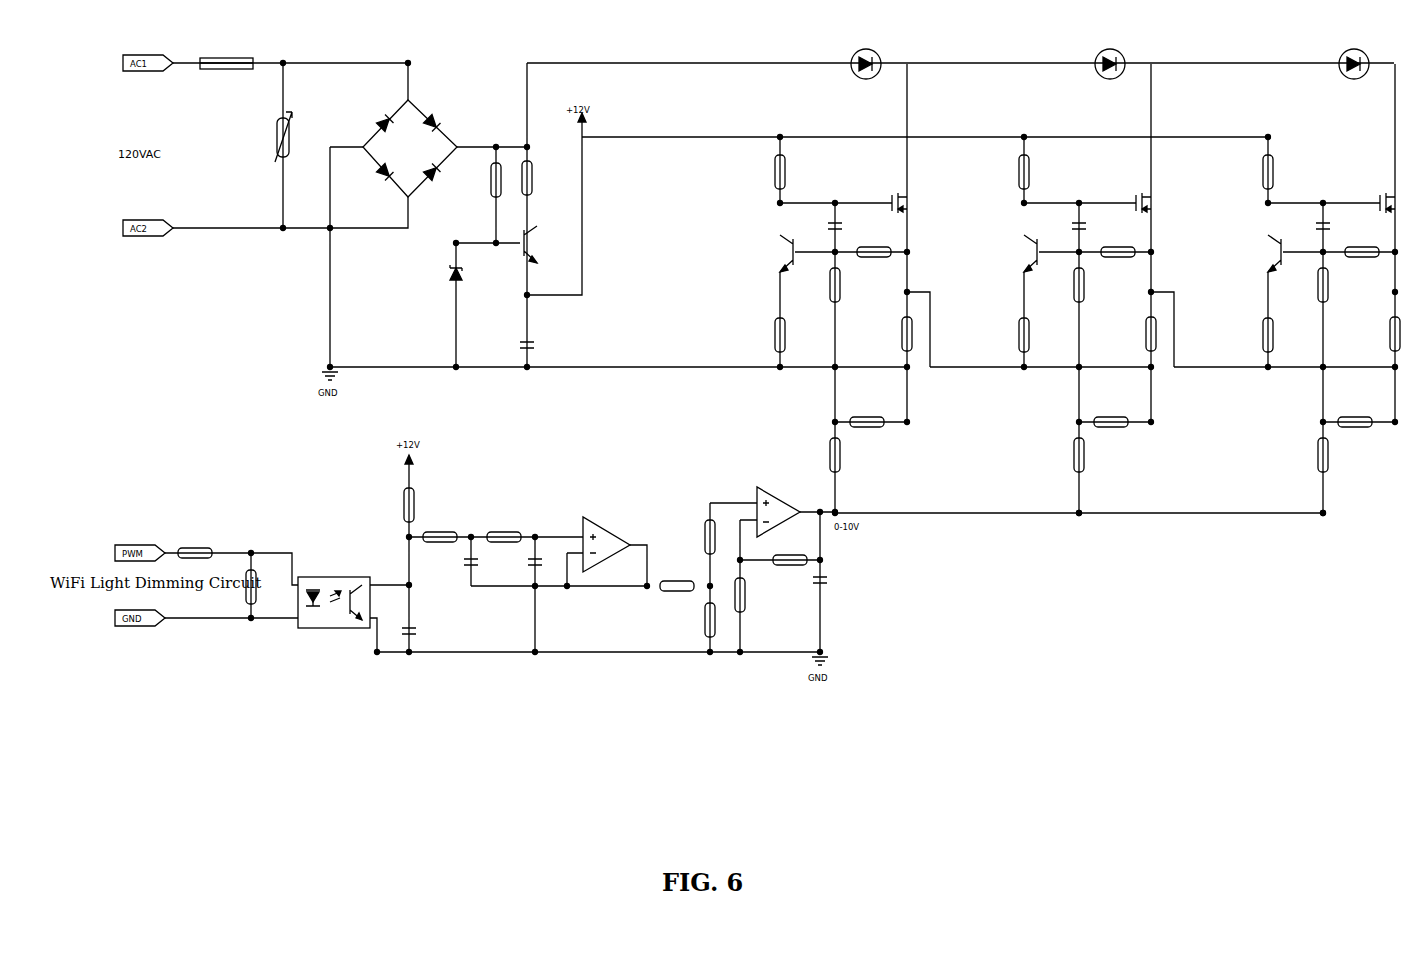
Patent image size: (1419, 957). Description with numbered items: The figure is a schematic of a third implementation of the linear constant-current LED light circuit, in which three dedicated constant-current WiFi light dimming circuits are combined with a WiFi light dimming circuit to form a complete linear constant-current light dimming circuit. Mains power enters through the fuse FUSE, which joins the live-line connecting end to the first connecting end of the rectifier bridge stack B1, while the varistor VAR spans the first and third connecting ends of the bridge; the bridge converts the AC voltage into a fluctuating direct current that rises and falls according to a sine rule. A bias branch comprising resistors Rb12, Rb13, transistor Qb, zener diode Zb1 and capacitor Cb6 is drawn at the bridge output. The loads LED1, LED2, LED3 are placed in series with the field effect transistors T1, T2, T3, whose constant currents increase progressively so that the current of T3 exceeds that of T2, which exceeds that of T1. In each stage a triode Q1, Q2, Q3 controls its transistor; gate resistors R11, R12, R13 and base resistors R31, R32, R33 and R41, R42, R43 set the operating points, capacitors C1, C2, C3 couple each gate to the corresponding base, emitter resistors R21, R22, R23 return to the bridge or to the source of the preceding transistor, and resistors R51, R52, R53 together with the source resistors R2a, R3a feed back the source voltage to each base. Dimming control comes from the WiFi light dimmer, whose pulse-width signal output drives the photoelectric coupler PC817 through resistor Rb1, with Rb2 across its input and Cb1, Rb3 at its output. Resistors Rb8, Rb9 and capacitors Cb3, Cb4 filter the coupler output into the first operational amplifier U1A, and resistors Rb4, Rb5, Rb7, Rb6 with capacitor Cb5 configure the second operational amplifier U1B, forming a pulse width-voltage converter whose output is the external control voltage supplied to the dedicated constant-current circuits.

The rectifier bridge stack B1 is at (409, 142).
The element LED1 is at (866, 75).
The element LED2 is at (1110, 75).
The element LED3 is at (1354, 75).
The field effect transistor T1 is at (909, 203).
The field effect transistor T2 is at (1153, 203).
The field effect transistor T3 is at (1397, 203).
The triode Q1 is at (799, 248).
The triode Q2 is at (1043, 248).
The triode Q3 is at (1287, 248).
The transistor Qb is at (534, 244).
The zener diode Zb1 is at (466, 278).
The varistor VAR is at (264, 137).
The fuse FUSE is at (225, 64).
The optocoupler PC817 is at (335, 610).
The op-amp LM2904 (first) U1A is at (604, 538).
The op-amp LM2904 (second) U1B is at (780, 504).
The resistor R11 is at (790, 167).
The resistor R12 is at (1034, 167).
The resistor R13 is at (1278, 167).
The resistor R21 is at (791, 335).
The resistor R22 is at (1035, 335).
The resistor R23 is at (1279, 335).
The resistor R31 is at (874, 254).
The resistor R32 is at (1118, 254).
The resistor R33 is at (1362, 254).
The resistor R41 is at (846, 285).
The resistor R42 is at (1090, 285).
The resistor R43 is at (1334, 285).
The resistor R51 is at (866, 423).
The resistor R52 is at (1110, 423).
The resistor R53 is at (1354, 423).
The resistor R2a is at (888, 335).
The resistor R3a is at (1376, 335).
The capacitor C1 is at (842, 221).
The capacitor C2 is at (1086, 221).
The capacitor C3 is at (1330, 221).
The resistor Rb1 is at (195, 553).
The resistor Rb2 is at (260, 587).
The resistor Rb3 is at (419, 500).
The resistor Rb4 is at (677, 587).
The resistor Rb5 is at (750, 595).
The resistor Rb6 is at (695, 620).
The resistor Rb7 is at (696, 537).
The resistor Rb8 is at (440, 537).
The resistor Rb9 is at (504, 523).
The resistor Rb12 is at (478, 180).
The resistor Rb13 is at (539, 178).
The capacitor Cb1 is at (419, 632).
The capacitor Cb3 is at (483, 565).
The capacitor Cb4 is at (547, 565).
The capacitor Cb5 is at (829, 580).
The capacitor Cb6 is at (537, 337).